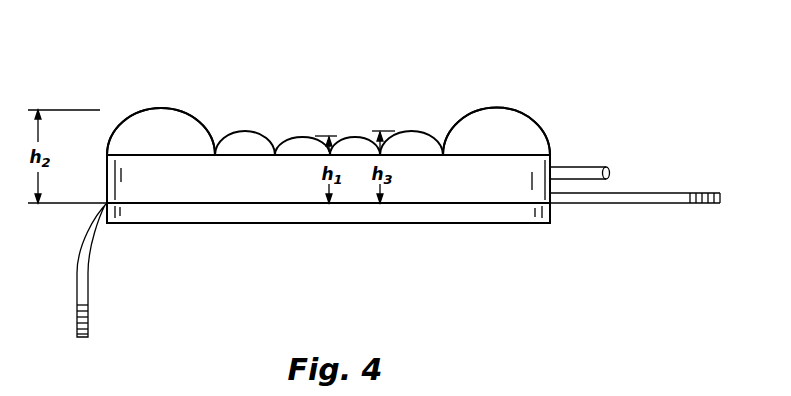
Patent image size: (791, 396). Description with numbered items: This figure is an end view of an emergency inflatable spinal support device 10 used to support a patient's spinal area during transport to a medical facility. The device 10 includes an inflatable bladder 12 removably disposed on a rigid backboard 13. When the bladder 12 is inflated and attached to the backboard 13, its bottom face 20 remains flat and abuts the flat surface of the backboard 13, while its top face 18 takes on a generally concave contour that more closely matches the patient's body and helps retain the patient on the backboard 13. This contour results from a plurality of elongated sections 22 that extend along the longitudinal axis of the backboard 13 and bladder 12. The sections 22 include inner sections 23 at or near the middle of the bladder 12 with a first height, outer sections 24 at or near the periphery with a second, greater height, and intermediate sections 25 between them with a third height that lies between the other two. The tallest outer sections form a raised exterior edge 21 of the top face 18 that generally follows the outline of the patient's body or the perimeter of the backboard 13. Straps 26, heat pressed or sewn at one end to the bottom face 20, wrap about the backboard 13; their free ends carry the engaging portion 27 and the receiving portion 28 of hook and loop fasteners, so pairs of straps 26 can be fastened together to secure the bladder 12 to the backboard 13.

The emergency inflatable spinal support device 10 is at (612, 70).
The inflatable bladder 12 is at (157, 190).
The rigid backboard 13 is at (277, 212).
The top face 18 is at (243, 130).
The bottom face 20 is at (415, 205).
The raised exterior edge 21 is at (133, 125).
The elongated sections 22 is at (188, 113).
The inner sections 23 is at (292, 140).
The outer sections 24 is at (530, 137).
The intermediate sections 25 is at (423, 132).
The straps 26 is at (625, 197).
The engaging portion 27 is at (82, 325).
The receiving portion 28 is at (703, 195).